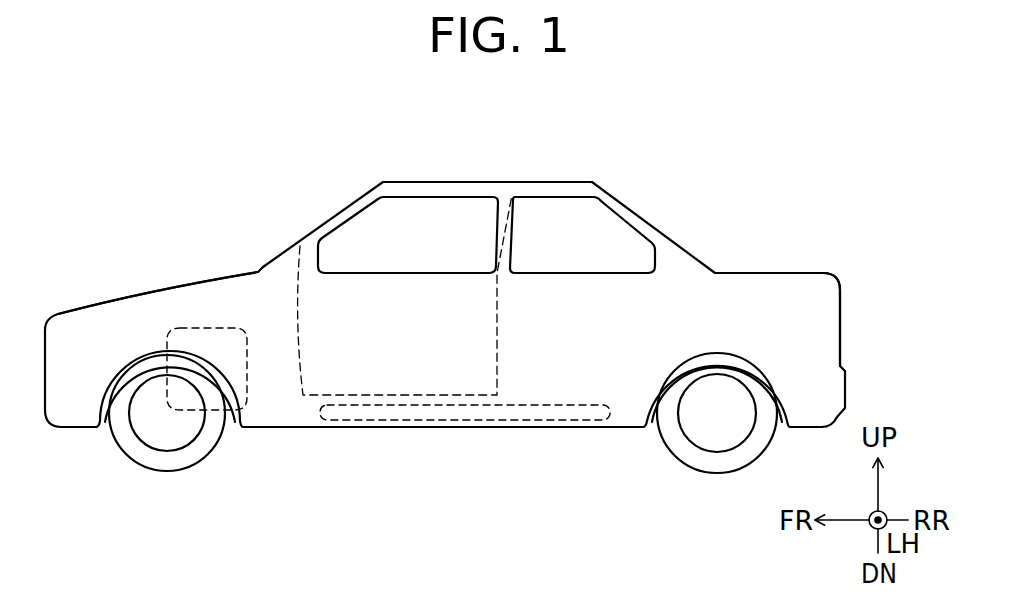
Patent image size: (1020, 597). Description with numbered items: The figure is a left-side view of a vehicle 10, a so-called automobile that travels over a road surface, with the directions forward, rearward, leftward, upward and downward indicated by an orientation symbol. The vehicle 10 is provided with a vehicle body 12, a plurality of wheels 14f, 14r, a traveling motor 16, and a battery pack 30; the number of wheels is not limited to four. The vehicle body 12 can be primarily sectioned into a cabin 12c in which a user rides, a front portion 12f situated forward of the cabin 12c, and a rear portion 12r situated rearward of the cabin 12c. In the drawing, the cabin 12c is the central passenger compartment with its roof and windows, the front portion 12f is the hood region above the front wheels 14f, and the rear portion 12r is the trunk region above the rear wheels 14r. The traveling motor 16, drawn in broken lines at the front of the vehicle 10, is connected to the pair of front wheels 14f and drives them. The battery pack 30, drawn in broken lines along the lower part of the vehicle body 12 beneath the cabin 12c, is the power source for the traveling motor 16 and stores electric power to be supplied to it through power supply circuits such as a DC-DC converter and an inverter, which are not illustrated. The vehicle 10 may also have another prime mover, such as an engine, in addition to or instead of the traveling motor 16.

The vehicle 10 is at (752, 163).
The vehicle body 12 is at (530, 182).
The cabin 12c is at (435, 220).
The front portion 12f is at (158, 307).
The rear portion 12r is at (800, 298).
The front wheels 14f is at (142, 453).
The rear wheels 14r is at (705, 472).
The traveling motor 16 is at (256, 415).
The battery pack 30 is at (503, 420).